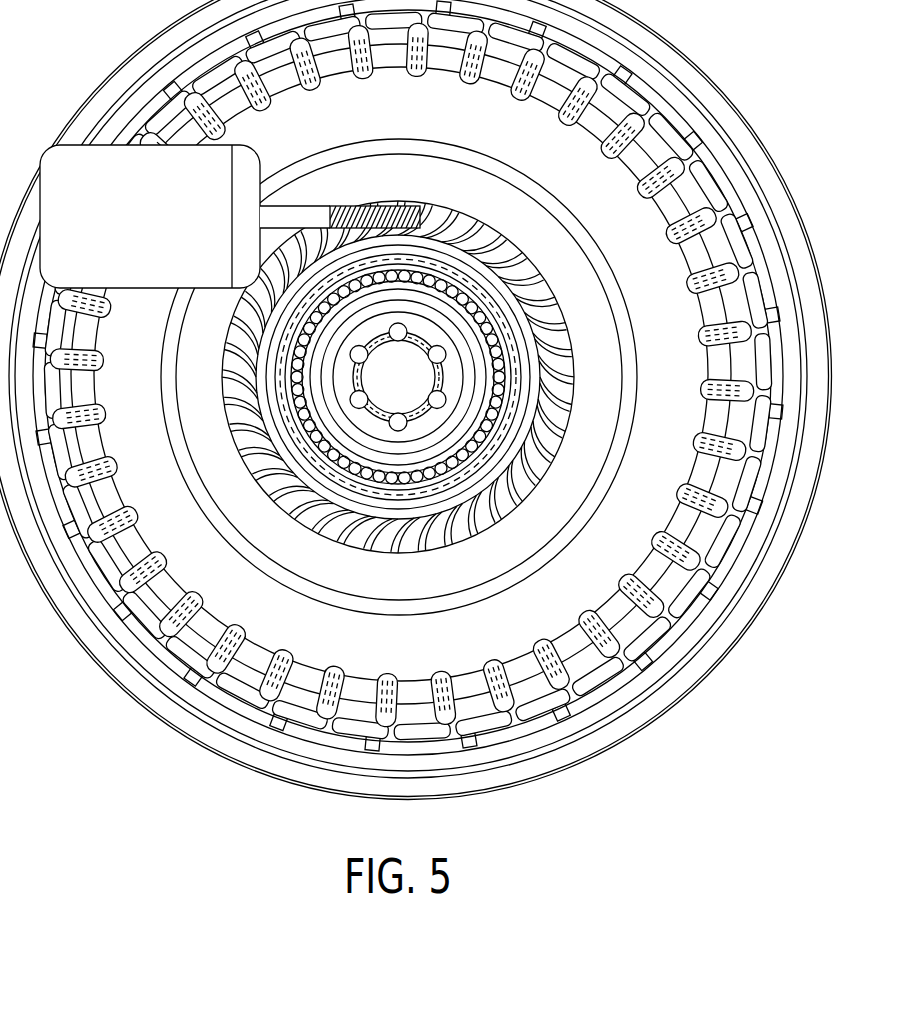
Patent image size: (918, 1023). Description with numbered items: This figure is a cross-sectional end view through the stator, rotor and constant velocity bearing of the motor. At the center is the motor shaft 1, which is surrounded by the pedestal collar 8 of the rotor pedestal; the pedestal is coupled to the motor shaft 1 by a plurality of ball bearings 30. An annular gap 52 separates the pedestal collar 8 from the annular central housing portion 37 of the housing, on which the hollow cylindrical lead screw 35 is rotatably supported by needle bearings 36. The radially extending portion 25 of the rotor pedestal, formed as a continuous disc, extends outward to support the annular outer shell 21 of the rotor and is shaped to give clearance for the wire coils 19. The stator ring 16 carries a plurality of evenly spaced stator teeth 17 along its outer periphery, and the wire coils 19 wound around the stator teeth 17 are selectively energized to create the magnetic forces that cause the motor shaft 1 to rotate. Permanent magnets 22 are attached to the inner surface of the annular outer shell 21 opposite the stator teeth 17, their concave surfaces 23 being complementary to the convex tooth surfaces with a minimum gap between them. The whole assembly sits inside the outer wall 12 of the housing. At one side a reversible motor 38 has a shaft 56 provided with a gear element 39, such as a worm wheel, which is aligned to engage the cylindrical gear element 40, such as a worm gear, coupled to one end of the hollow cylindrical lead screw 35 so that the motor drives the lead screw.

The motor shaft 1 is at (420, 365).
The pedestal collar 8 is at (272, 490).
The outer wall 12 is at (748, 177).
The stator ring 16 is at (652, 281).
The stator teeth 17 is at (717, 360).
The wire coils 19 is at (700, 335).
The annular outer shell 21 is at (767, 270).
The permanent magnets 22 is at (762, 374).
The surfaces of the permanent magnets 23 is at (720, 470).
The radially extending portion 25 is at (609, 364).
The ball bearings 30 is at (398, 332).
The hollow cylindrical lead screw 35 is at (435, 507).
The bearings 36 is at (428, 416).
The annular central housing portion 37 is at (460, 448).
The reversible motor 38 is at (160, 230).
The gear element 39 is at (398, 205).
The cylindrical gear element 40 is at (547, 283).
The annular gap 52 is at (455, 421).
The shaft 56 is at (318, 213).